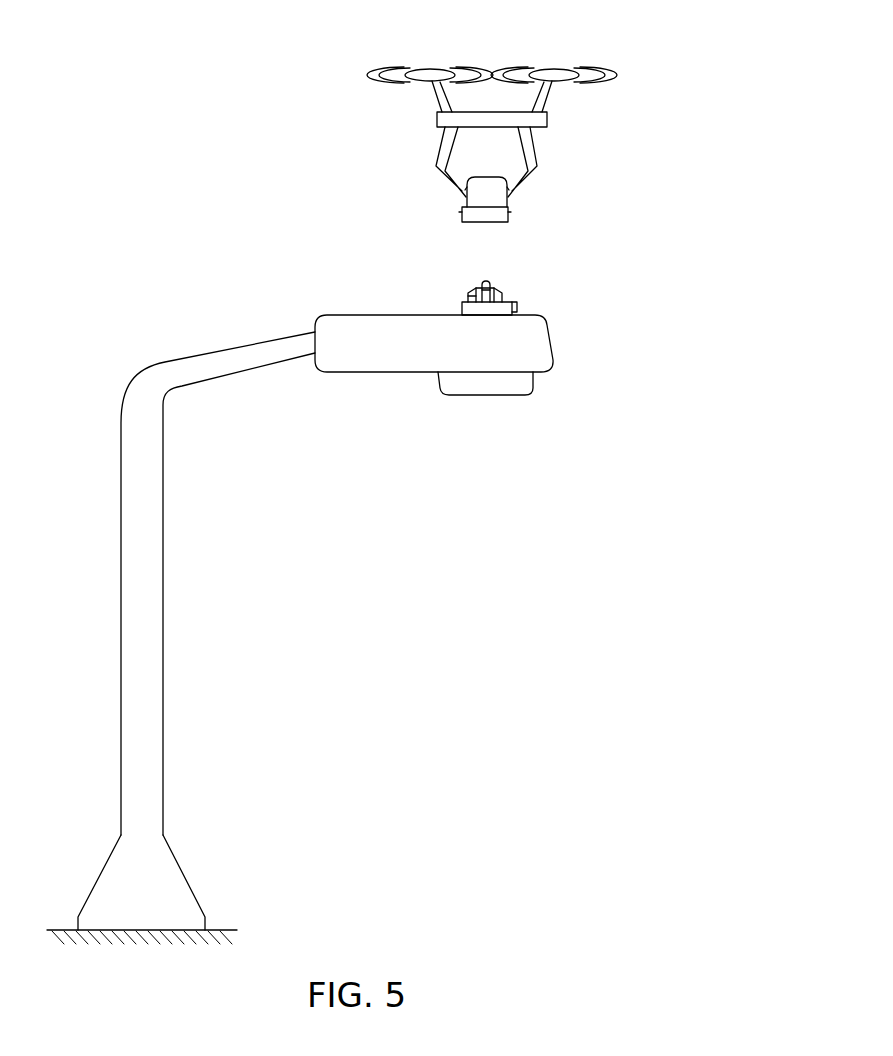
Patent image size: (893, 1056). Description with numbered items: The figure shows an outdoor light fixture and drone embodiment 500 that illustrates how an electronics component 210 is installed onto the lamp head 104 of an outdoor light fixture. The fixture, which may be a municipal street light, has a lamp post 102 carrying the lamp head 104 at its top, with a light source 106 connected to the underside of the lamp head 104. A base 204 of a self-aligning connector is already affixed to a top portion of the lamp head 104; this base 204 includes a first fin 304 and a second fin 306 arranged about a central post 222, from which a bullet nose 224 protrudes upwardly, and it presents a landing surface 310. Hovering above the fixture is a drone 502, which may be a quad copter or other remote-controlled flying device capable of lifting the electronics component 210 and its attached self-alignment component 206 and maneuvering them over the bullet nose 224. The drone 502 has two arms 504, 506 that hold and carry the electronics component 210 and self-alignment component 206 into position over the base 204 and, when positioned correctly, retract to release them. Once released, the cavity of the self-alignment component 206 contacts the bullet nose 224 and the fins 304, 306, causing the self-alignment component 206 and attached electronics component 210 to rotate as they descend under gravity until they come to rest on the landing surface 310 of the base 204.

The outdoor light fixture and drone embodiment 500 is at (673, 54).
The lamp post 102 is at (120, 612).
The lamp head 104 is at (555, 345).
The light source 106 is at (492, 397).
The base 204 is at (518, 308).
The self-alignment component 206 is at (512, 215).
The electronics component 210 is at (508, 197).
The central post 222 is at (485, 283).
The bullet nose 224 is at (492, 284).
The first fin 304 is at (471, 291).
The second fin 306 is at (503, 291).
The landing surface 310 is at (465, 294).
The drone 502 is at (557, 118).
The arm 504 is at (438, 152).
The arm 506 is at (534, 158).